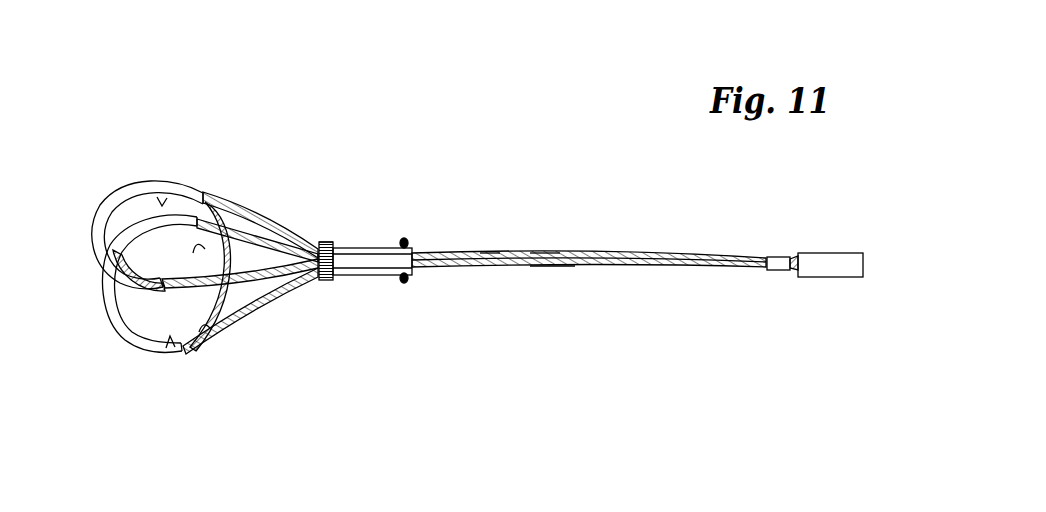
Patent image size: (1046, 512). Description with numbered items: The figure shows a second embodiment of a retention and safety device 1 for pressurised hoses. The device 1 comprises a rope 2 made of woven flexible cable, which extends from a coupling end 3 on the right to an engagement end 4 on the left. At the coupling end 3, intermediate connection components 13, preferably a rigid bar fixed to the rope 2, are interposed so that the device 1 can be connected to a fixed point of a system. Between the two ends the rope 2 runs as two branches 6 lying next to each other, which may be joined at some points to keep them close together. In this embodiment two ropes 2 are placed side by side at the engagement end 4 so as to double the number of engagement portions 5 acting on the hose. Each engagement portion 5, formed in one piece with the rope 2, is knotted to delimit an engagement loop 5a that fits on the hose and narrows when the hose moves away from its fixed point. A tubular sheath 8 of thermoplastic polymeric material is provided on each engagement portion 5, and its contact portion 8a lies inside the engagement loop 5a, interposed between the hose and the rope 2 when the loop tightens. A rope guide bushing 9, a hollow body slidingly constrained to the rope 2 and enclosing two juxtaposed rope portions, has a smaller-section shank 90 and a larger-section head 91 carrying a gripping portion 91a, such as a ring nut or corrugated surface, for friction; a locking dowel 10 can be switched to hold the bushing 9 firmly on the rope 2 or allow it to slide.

The retention and safety device 1 is at (599, 152).
The rope 2 is at (505, 250).
The coupling end 3 is at (765, 256).
The engagement end 4 is at (427, 252).
The engagement portion 5 is at (309, 236).
The engagement loop 5a is at (195, 268).
The branches 6 is at (533, 251).
The sheath 8 is at (187, 193).
The contact portion 8a is at (158, 200).
The rope guide bushing 9 is at (349, 150).
The locking dowel 10 is at (400, 232).
The intermediate connection components 13 is at (812, 270).
The shank 90 is at (355, 277).
The head 91 is at (323, 281).
The gripping portion 91a is at (330, 241).